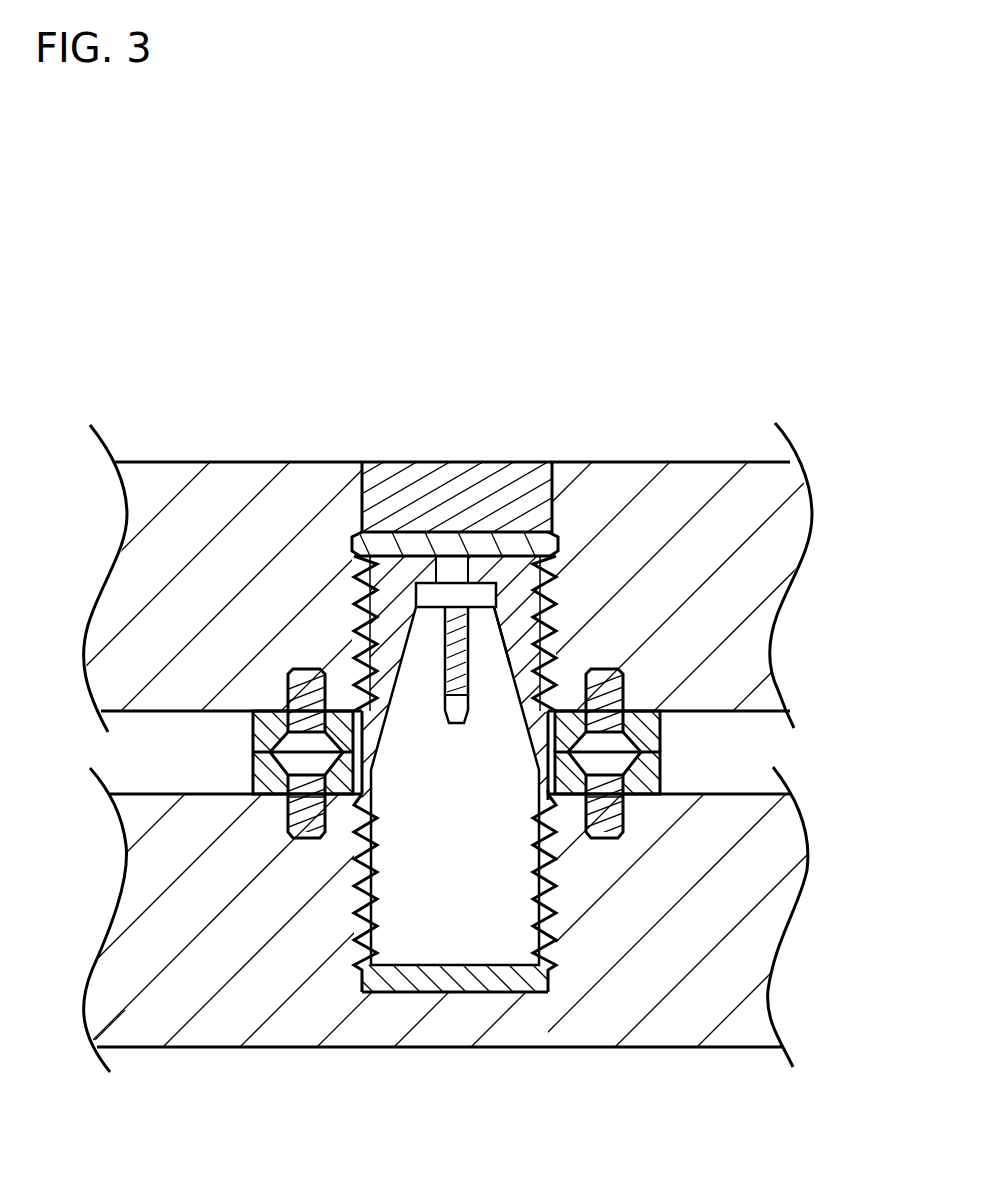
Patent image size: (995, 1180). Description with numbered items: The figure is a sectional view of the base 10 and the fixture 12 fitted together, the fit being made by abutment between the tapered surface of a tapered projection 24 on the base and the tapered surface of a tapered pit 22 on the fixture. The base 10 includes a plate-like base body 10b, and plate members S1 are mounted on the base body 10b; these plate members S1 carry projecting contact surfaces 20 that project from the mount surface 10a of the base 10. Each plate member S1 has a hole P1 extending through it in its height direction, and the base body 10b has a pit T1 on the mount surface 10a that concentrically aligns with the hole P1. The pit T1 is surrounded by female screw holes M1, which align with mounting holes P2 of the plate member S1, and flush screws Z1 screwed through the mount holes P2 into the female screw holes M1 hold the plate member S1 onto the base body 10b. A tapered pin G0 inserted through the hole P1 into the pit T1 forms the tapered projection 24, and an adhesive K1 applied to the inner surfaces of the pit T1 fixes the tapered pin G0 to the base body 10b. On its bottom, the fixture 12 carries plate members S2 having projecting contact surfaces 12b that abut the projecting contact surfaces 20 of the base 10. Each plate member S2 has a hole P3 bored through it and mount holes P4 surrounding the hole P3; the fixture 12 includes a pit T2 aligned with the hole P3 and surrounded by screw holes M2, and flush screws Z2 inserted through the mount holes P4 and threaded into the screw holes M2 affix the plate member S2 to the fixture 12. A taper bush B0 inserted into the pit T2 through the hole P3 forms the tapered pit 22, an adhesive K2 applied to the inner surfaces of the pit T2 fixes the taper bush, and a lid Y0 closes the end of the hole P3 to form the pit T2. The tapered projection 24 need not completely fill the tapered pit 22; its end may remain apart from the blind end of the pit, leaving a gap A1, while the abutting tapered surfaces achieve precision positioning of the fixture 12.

The base 10 is at (810, 878).
The mount surface 10a is at (137, 793).
The base body 10b is at (132, 903).
The fixture 12 is at (804, 558).
The projecting contact surfaces 12b is at (668, 757).
The projecting contact surfaces 20 is at (256, 740).
The tapered pit 22 is at (395, 520).
The tapered projection 24 is at (520, 567).
The gap A1 is at (452, 540).
The adhesive K2 is at (455, 565).
The taper bush B0 is at (498, 560).
The lid Y0 is at (533, 540).
The pit T2 is at (538, 530).
The adhesive K1 is at (403, 985).
The tapered pin G0 is at (447, 967).
The pit T1 is at (538, 977).
The hole P3 is at (497, 622).
The screw holes M2 is at (314, 675).
The female screw holes M1 is at (303, 828).
The mount holes P4 is at (288, 707).
The mounting holes P2 is at (298, 798).
The hole P1 is at (532, 798).
The plate member S1 is at (667, 779).
The plate member S2 is at (667, 737).
The flush screws Z1 is at (362, 782).
The flush screws Z2 is at (357, 738).